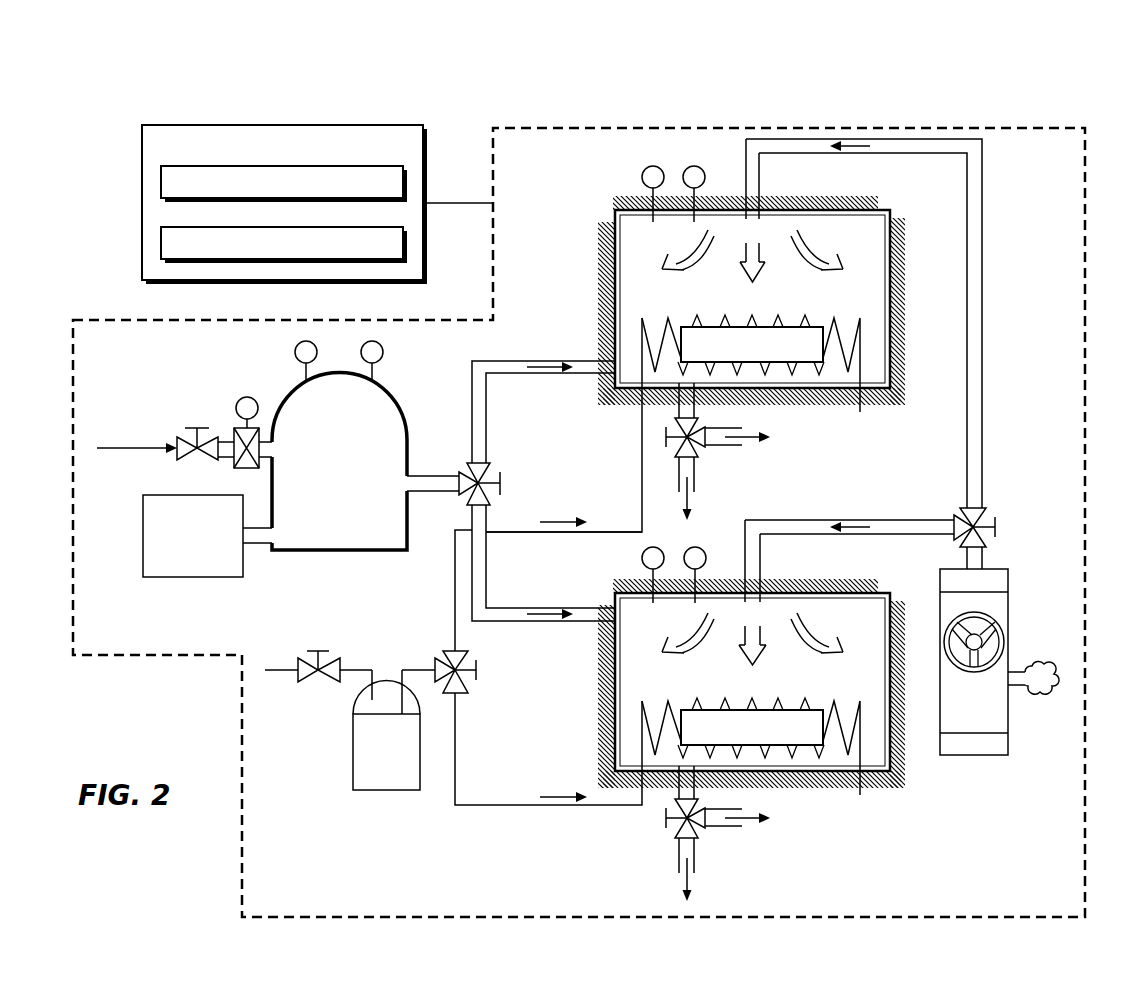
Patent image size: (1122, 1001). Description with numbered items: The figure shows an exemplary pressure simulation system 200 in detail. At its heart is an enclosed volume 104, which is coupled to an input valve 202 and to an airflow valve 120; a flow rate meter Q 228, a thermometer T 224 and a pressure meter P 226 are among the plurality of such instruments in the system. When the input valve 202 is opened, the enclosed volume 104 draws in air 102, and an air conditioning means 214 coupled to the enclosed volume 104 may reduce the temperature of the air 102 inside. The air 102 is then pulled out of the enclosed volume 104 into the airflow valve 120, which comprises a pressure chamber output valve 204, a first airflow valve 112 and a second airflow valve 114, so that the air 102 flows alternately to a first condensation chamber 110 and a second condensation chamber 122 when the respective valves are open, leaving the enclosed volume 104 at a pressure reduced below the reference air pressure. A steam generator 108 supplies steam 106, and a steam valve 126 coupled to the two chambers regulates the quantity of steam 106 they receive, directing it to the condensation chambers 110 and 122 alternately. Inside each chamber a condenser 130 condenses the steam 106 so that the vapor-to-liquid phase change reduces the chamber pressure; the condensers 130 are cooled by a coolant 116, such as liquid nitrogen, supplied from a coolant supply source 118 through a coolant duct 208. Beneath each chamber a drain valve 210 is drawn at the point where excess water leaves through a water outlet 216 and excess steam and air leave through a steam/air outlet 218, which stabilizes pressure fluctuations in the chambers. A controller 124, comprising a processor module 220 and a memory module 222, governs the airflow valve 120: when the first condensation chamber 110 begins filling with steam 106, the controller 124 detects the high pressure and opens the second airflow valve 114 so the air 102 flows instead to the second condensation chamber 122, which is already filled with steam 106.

The pressure simulation system 200 is at (1049, 100).
The controller 124 is at (428, 140).
The processor module 220 is at (161, 177).
The memory module 222 is at (161, 238).
The air 102 is at (131, 447).
The input valve 202 is at (193, 428).
The flow rate meter 228 is at (238, 398).
The enclosed volume 104 is at (313, 397).
The air conditioning means 214 is at (172, 563).
The thermometer 224 is at (296, 350).
The pressure meter 226 is at (384, 352).
The pressure chamber output valve 204 is at (467, 472).
The airflow valve 120 is at (502, 479).
The first airflow valve 112 is at (485, 463).
The second airflow valve 114 is at (470, 506).
The coolant 116 is at (559, 520).
The coolant duct 208 is at (626, 532).
The coolant supply source 118 is at (353, 766).
The condensation chamber 110 is at (617, 218).
The condensation chamber 122 is at (622, 598).
The steam 106 is at (863, 143).
The condenser 130 is at (852, 331).
The drain valve 210 is at (665, 434).
The water outlet 216 is at (683, 471).
The steam/air outlet 218 is at (718, 441).
The steam valve 126 is at (1000, 515).
The steam generator 108 is at (998, 581).